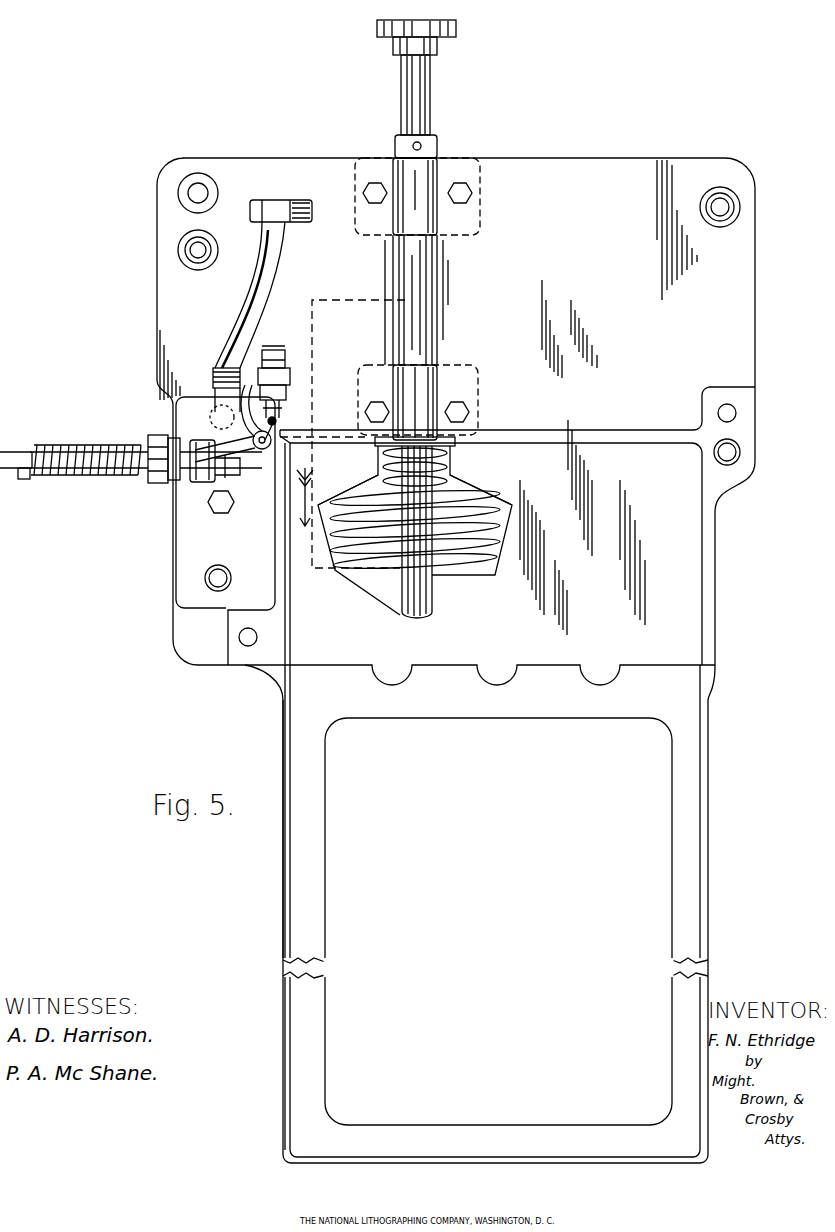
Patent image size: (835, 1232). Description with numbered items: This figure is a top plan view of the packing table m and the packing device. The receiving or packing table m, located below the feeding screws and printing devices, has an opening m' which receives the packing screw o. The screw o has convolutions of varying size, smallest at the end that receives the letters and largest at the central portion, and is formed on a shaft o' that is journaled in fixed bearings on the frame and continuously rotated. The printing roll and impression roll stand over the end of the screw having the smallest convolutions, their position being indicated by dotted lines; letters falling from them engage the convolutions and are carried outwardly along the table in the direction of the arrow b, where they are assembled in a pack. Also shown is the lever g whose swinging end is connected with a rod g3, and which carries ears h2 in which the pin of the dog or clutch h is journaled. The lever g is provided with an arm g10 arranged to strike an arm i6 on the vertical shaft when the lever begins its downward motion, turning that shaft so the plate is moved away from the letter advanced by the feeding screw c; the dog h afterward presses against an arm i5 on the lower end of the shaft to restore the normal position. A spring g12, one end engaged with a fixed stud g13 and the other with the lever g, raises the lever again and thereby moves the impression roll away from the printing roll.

The packing table m is at (456, 660).
The opening m' is at (415, 541).
The packing screw o is at (419, 509).
The shaft o' is at (419, 342).
The feed belt b is at (313, 497).
The lever g is at (262, 310).
The rod g3 is at (296, 205).
The arm g10 is at (214, 499).
The spring g12 is at (72, 445).
The fixed stud g13 is at (10, 448).
The dog h is at (274, 376).
The ears h2 is at (287, 356).
The arm i5 is at (292, 402).
The arm i6 is at (215, 448).
The feeding screw c is at (280, 424).